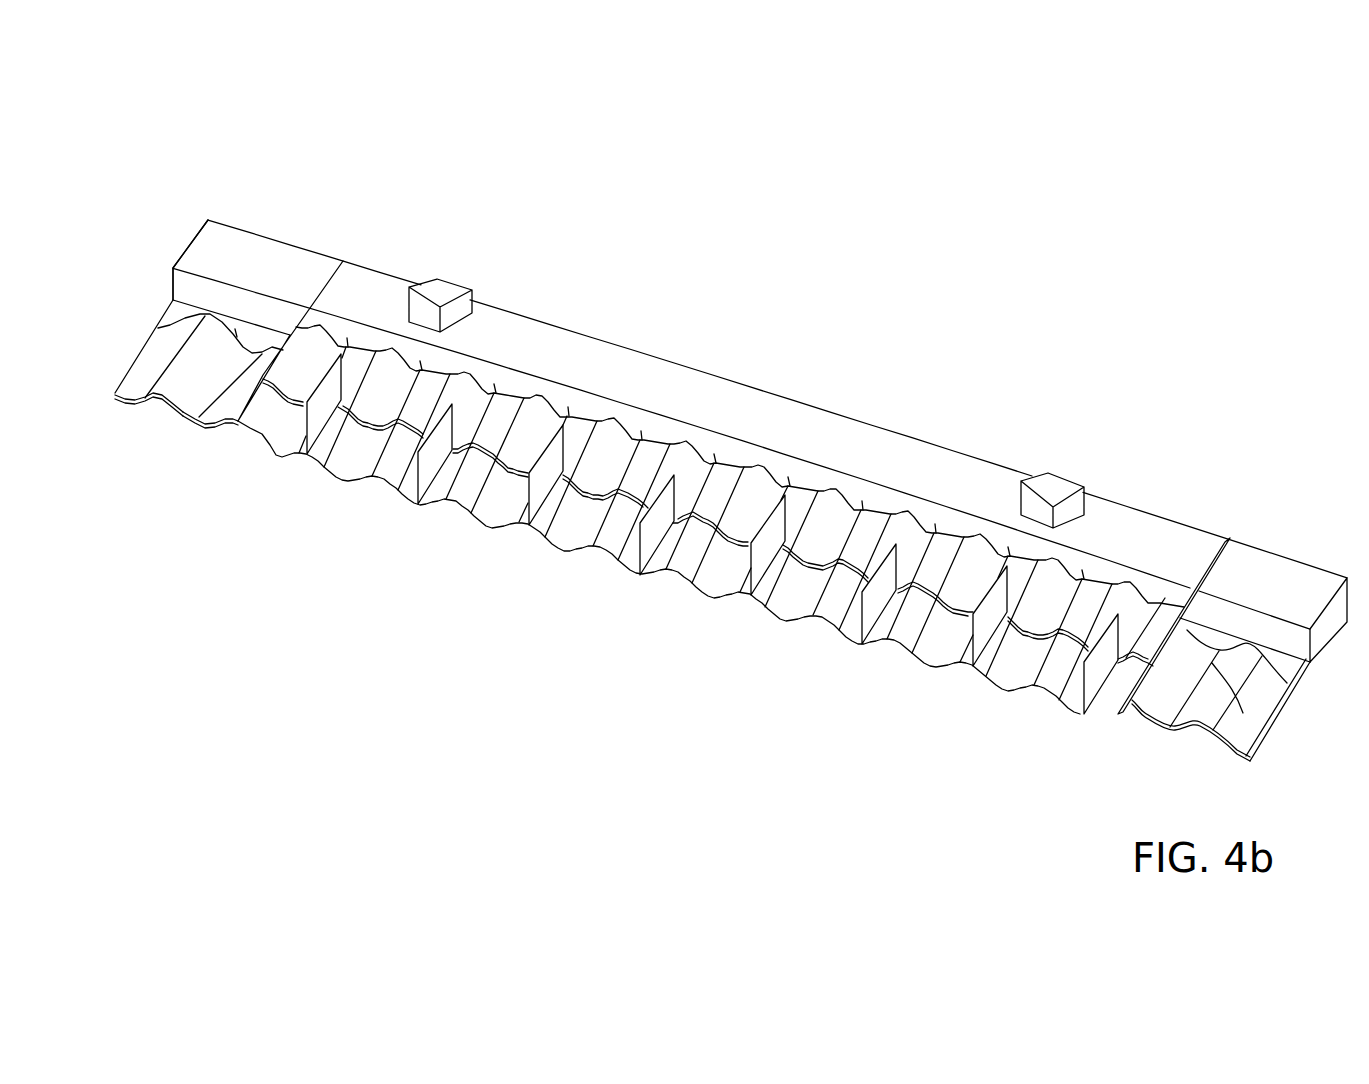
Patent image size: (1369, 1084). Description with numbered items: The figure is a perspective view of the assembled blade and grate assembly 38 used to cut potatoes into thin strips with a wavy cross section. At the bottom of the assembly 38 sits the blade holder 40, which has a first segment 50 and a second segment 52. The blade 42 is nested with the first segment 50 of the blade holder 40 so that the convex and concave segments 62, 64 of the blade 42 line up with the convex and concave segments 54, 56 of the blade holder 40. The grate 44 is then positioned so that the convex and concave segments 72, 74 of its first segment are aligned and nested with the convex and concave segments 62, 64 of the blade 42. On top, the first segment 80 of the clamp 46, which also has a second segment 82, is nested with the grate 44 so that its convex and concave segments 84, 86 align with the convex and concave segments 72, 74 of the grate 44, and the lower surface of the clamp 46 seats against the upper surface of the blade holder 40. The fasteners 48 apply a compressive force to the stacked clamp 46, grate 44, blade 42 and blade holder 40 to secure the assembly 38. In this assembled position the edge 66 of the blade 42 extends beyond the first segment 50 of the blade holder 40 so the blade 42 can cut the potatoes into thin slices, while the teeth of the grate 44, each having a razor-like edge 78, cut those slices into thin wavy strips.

The blade and grate assembly 38 is at (1050, 256).
The blade holder 40 is at (240, 230).
The blade 42 is at (253, 448).
The grate 44 is at (1100, 670).
The clamp 46 is at (755, 390).
The fasteners 48 is at (473, 297).
The first segment 50 is at (142, 260).
The second segment 52 is at (193, 212).
The convex segments 54 is at (165, 402).
The concave segments 56 is at (202, 428).
The convex segments 62 is at (308, 460).
The concave segments 64 is at (417, 506).
The edge 66 is at (500, 530).
The convex segments 72 is at (907, 645).
The concave segments 74 is at (1012, 665).
The edge 78 is at (662, 545).
The first segment 80 is at (1258, 731).
The second segment 82 is at (1216, 566).
The convex segments 84 is at (1010, 610).
The concave segments 86 is at (966, 600).